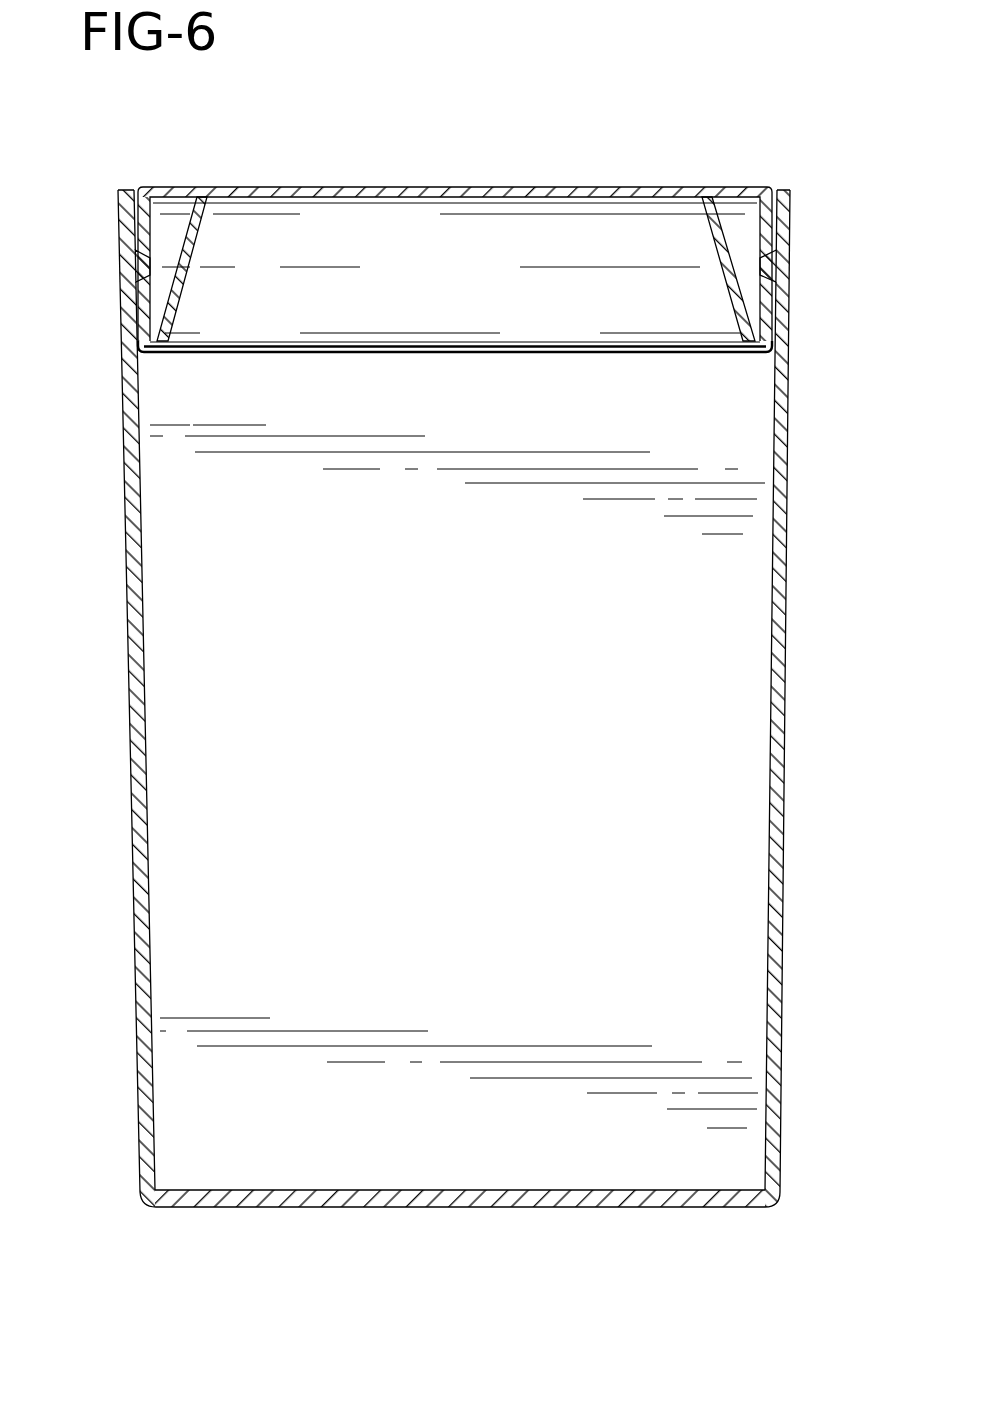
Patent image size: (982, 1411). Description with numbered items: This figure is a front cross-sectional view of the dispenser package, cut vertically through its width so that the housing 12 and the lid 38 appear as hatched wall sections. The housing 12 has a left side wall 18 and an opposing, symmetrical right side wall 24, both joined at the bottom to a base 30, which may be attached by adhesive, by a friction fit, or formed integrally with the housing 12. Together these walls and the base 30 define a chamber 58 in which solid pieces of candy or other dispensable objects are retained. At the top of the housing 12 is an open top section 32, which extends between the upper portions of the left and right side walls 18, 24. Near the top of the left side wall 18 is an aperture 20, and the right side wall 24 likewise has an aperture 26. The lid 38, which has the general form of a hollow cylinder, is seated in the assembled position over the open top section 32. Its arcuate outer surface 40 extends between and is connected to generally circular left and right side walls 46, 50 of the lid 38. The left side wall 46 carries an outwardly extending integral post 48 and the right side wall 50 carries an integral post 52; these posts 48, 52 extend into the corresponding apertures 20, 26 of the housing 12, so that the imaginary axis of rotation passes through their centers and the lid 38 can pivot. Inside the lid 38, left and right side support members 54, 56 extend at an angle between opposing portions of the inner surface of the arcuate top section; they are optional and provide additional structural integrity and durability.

The housing 12 is at (458, 697).
The left side wall 18 is at (140, 1113).
The aperture 20 is at (122, 294).
The right side wall 24 is at (780, 1118).
The aperture 26 is at (790, 290).
The base 30 is at (738, 1198).
The open top section 32 is at (378, 265).
The lid 38 is at (455, 209).
The arcuate outer surface 40 is at (450, 186).
The left side wall 46 is at (137, 240).
The post 48 is at (128, 272).
The right side wall 50 is at (790, 200).
The post 52 is at (777, 267).
The left side support member 54 is at (196, 250).
The right side support member 56 is at (723, 267).
The chamber 58 is at (678, 828).